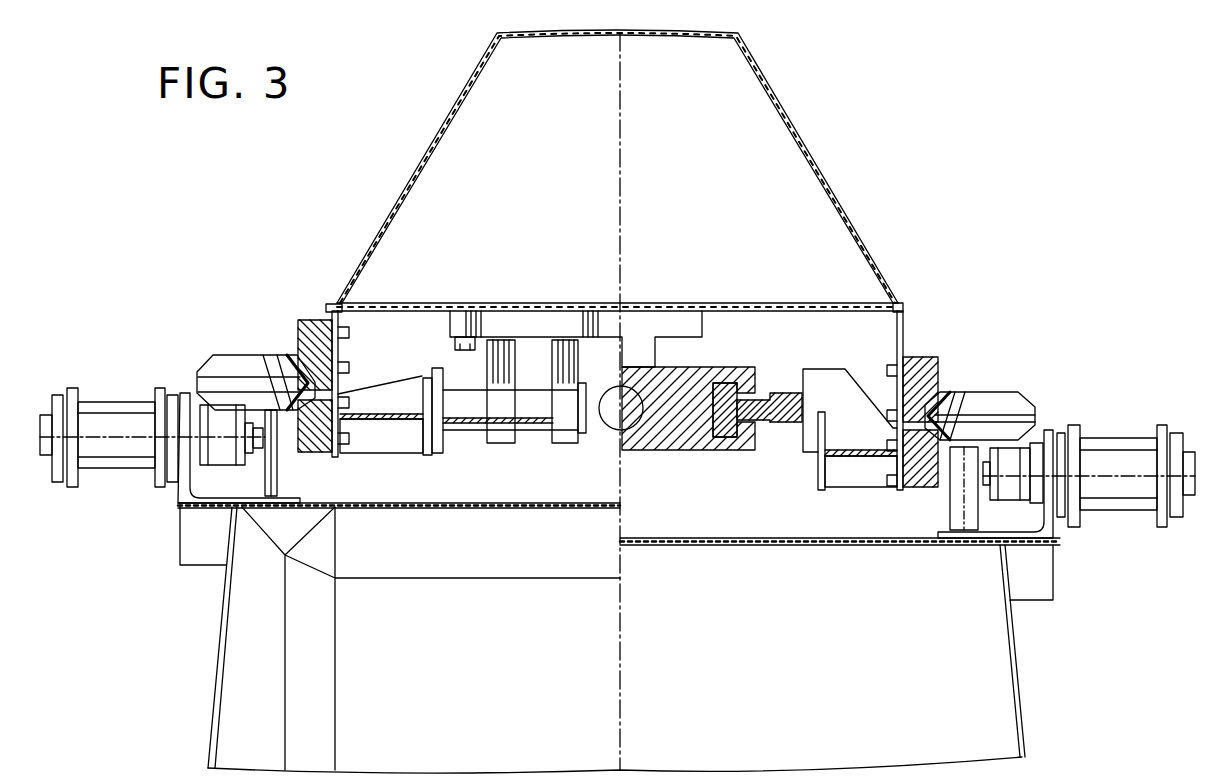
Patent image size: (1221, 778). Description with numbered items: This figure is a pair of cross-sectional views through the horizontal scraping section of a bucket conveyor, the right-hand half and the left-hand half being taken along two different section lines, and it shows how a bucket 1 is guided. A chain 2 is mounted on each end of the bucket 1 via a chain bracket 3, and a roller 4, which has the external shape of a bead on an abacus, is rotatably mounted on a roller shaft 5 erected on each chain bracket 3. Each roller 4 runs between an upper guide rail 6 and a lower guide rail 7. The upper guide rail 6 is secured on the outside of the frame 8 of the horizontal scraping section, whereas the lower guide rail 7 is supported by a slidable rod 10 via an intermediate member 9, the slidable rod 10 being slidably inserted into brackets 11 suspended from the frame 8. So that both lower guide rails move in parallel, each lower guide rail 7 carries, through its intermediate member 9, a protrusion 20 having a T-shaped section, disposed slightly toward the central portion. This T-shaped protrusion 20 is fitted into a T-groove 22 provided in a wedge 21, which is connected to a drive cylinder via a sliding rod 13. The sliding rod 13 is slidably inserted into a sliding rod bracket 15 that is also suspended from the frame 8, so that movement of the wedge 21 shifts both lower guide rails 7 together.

The bucket 1 is at (228, 665).
The chain 2 is at (72, 388).
The chain bracket 3 is at (182, 490).
The roller 4 is at (230, 355).
The roller shaft 5 is at (270, 412).
The upper guide rail 6 is at (312, 320).
The lower guide rail 7 is at (312, 452).
The frame 8 is at (402, 200).
The intermediate member 9 is at (402, 450).
The slidable rod 10 is at (462, 422).
The bracket 11 is at (508, 445).
The sliding rod 13 is at (634, 428).
The sliding rod bracket 15 is at (648, 311).
The protrusion 20 is at (762, 393).
The wedge 21 is at (680, 450).
The T-groove 22 is at (728, 437).